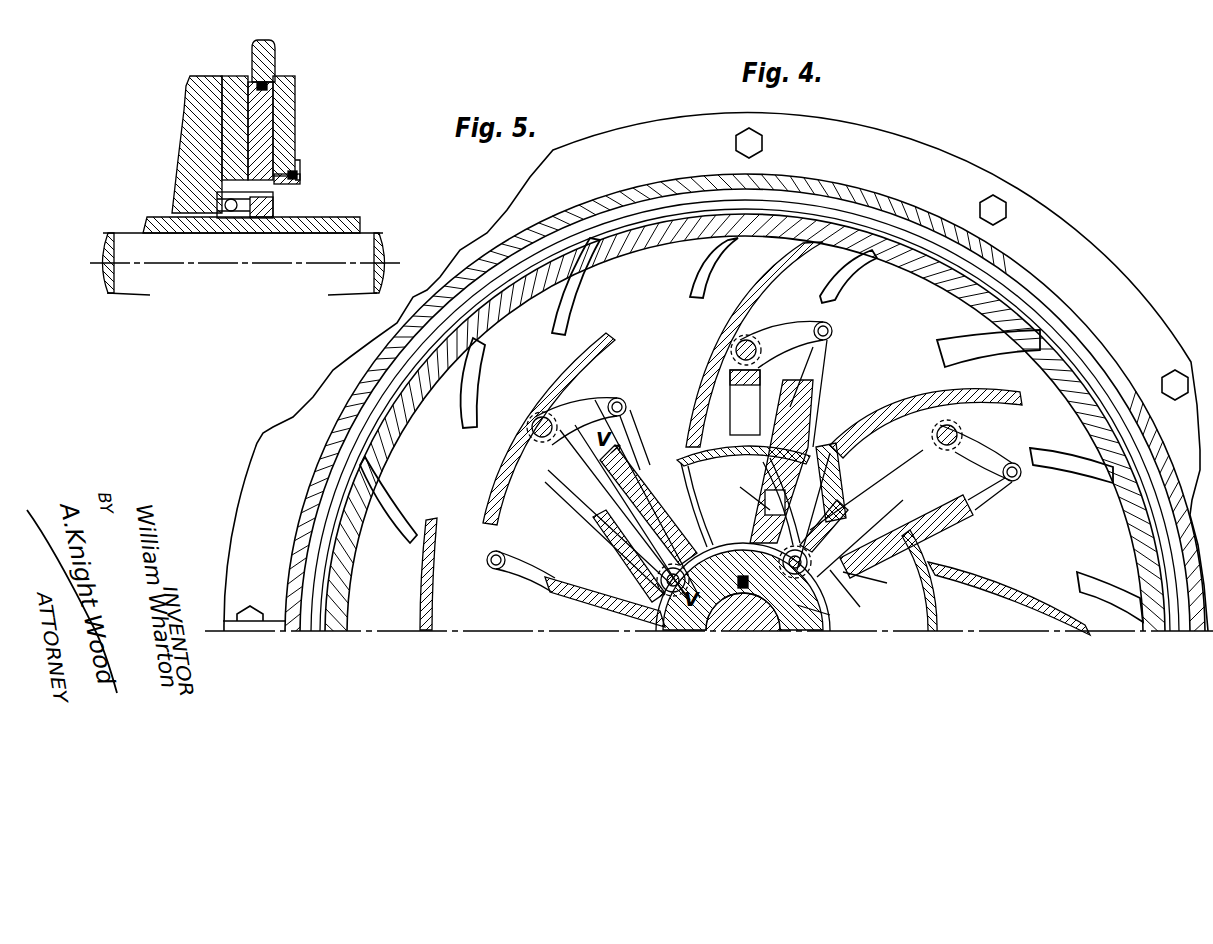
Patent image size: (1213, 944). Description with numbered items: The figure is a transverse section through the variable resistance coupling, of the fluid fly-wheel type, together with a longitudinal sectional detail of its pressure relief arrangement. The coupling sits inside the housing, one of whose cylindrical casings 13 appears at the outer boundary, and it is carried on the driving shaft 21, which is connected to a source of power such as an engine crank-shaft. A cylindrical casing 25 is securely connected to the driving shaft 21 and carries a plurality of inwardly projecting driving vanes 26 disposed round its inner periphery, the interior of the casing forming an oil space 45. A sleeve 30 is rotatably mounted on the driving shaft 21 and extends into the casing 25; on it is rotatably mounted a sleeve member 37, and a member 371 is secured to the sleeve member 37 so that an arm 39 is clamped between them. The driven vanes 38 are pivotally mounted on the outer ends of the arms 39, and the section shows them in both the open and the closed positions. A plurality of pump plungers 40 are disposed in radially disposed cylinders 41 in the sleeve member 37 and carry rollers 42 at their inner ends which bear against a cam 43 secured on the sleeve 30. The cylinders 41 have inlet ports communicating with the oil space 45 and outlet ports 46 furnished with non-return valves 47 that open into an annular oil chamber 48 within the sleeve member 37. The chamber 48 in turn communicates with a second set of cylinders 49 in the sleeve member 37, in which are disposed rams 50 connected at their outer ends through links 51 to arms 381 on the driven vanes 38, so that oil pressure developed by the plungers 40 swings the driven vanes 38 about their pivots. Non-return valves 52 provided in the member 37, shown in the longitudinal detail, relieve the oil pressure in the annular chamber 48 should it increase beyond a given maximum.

In FIG. 4, the cylindrical casing 13 is at (850, 188).
In FIG. 4, the driving shaft 21 is at (742, 576).
In FIG. 5, the driving shaft 21 is at (133, 247).
In FIG. 4, the cylindrical casing 25 is at (350, 503).
In FIG. 4, the driving vanes 26 is at (467, 408).
In FIG. 5, the sleeve 30 is at (360, 223).
In FIG. 5, the sleeve member 37 is at (197, 133).
In FIG. 4, the member 371 is at (583, 560).
In FIG. 4, the driven vanes 38 is at (433, 517).
In FIG. 4, the arms 381 is at (570, 423).
In FIG. 4, the arm 39 is at (743, 413).
In FIG. 4, the pump plungers 40 is at (610, 535).
In FIG. 4, the cylinders 41 is at (620, 510).
In FIG. 4, the rollers 42 is at (687, 510).
In FIG. 4, the cam 43 is at (827, 614).
In FIG. 5, the cam 43 is at (262, 217).
In FIG. 4, the oil space 45 is at (657, 273).
In FIG. 4, the outlet ports 46 is at (835, 485).
In FIG. 4, the non-return valves 47 is at (860, 433).
In FIG. 4, the annular oil chamber 48 is at (680, 440).
In FIG. 4, the cylinders 49 is at (820, 532).
In FIG. 4, the rams 50 is at (810, 417).
In FIG. 5, the rams 50 is at (295, 103).
In FIG. 4, the links 51 is at (813, 355).
In FIG. 5, the links 51 is at (273, 50).
In FIG. 5, the non-return valves 52 is at (302, 173).